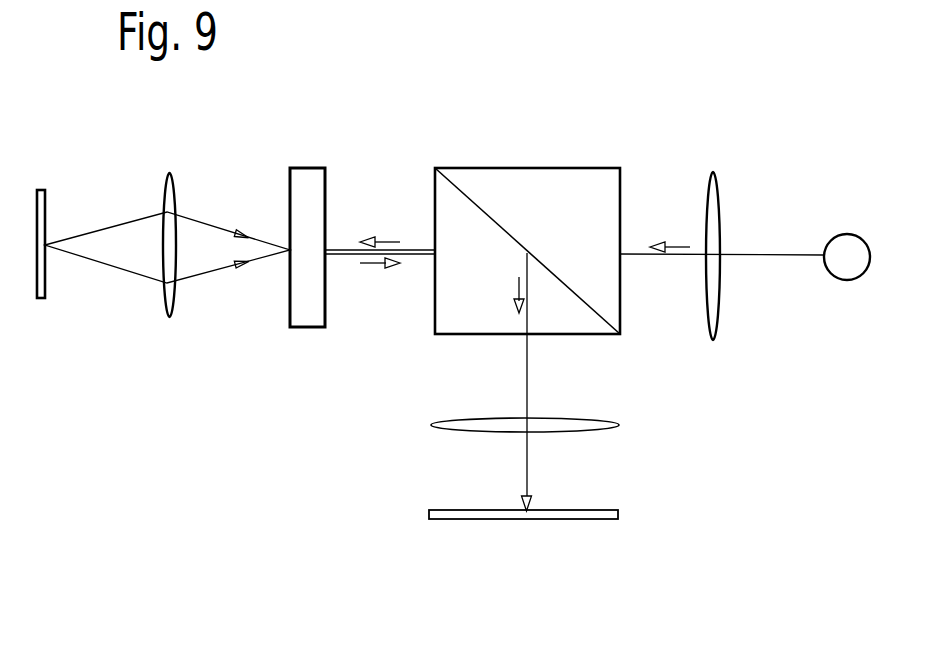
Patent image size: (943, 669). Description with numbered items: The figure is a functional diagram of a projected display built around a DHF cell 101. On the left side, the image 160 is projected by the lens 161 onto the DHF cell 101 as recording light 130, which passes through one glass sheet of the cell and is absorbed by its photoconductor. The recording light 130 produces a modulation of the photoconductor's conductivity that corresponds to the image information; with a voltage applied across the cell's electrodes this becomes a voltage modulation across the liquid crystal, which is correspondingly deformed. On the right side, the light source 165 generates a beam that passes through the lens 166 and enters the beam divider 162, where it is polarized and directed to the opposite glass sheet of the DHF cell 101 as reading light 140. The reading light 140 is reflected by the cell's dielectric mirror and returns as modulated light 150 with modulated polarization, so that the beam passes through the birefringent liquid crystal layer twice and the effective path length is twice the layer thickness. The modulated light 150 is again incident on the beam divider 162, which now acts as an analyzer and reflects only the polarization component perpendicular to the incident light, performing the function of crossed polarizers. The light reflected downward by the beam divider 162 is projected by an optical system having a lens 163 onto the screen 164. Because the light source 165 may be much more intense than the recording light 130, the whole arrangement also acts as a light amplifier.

The DHF cell 101 is at (322, 336).
The recording light 130 is at (222, 268).
The reading light 140 is at (387, 242).
The modulated light 150 is at (377, 263).
The image 160 is at (45, 283).
The lens 161 is at (174, 300).
The beam divider 162 is at (535, 168).
The lens 163 is at (578, 432).
The screen 164 is at (582, 519).
The light source 165 is at (827, 247).
The lens 166 is at (720, 217).